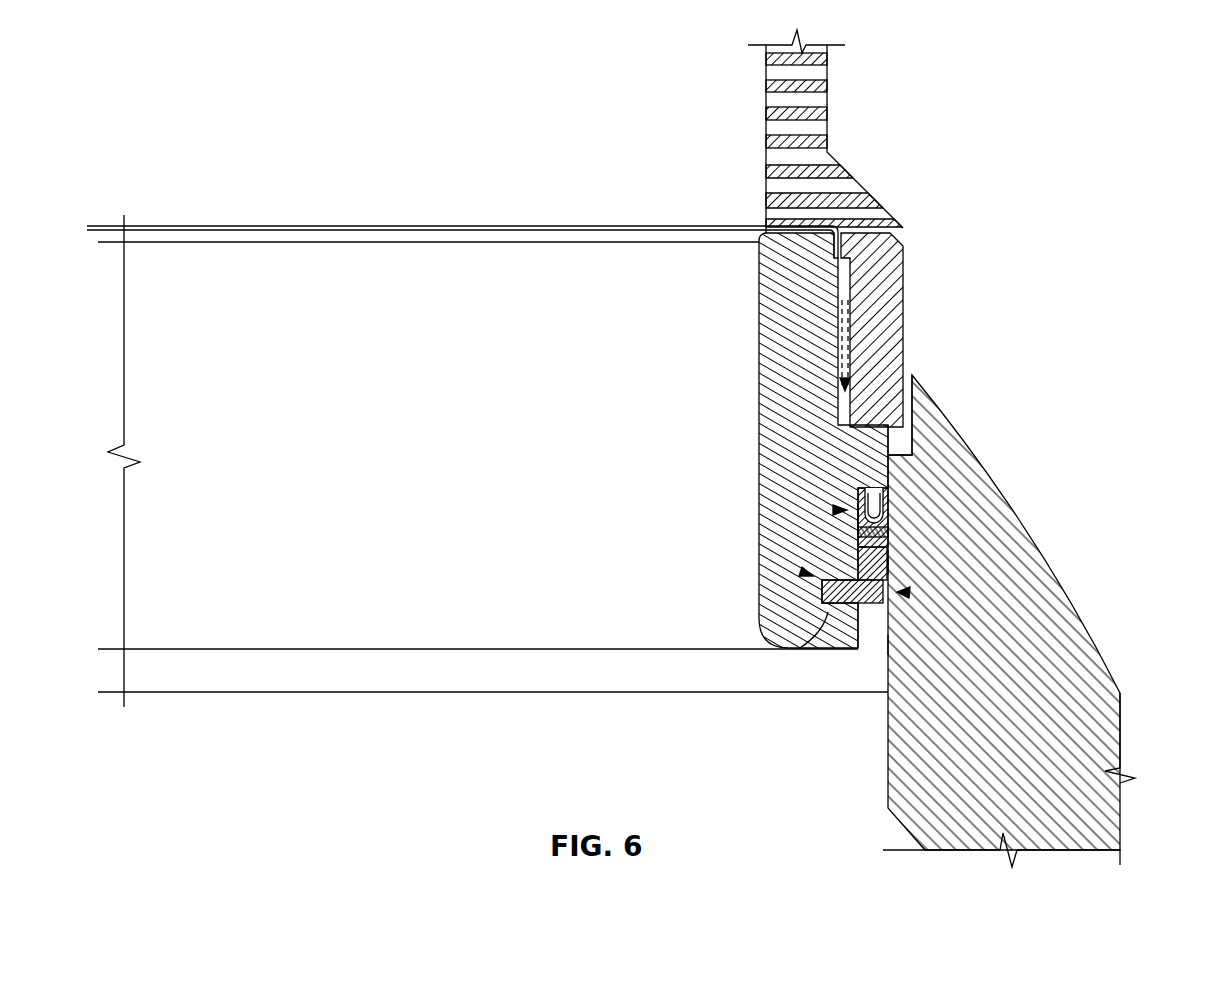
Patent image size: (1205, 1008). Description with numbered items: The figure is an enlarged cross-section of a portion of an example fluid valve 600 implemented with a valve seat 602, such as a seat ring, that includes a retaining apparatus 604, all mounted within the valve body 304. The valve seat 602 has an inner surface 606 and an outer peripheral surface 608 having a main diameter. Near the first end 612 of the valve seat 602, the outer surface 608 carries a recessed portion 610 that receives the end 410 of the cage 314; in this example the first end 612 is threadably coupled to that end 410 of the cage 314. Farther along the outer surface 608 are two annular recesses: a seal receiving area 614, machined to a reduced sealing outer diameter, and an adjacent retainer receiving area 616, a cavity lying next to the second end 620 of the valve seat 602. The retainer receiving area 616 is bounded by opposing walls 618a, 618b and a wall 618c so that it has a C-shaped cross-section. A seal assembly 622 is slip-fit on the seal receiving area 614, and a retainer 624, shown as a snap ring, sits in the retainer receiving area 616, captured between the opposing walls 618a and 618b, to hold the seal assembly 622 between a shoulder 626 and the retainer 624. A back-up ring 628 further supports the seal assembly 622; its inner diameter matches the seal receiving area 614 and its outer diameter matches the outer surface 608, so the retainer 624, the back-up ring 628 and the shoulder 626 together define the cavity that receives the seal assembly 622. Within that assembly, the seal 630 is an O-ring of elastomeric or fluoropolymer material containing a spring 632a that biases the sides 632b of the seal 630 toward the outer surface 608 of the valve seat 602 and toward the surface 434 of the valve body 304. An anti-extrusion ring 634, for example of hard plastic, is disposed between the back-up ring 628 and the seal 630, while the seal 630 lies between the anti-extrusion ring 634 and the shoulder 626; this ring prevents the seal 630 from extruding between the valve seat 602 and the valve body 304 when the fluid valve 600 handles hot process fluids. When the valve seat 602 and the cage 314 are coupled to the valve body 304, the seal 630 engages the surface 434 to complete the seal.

The fluid valve 600 is at (393, 62).
The cage 314 is at (827, 87).
The first end 612 is at (785, 227).
The end of the cage 410 is at (882, 288).
The recessed portion 610 is at (848, 300).
The inner surface 606 is at (758, 612).
The valve body 304 is at (903, 823).
The outer surface 608 is at (888, 448).
The shoulder 626 is at (860, 488).
The seal 630 is at (870, 510).
The spring 632a is at (860, 497).
The sides of the seal 632b is at (866, 530).
The seal assembly 622 is at (910, 536).
The opposing wall 618a is at (858, 548).
The opposing wall 618b is at (800, 648).
The wall 618c is at (822, 591).
The seal receiving area 614 is at (833, 509).
The retainer receiving area 616 is at (800, 571).
The retainer 624 is at (850, 577).
The valve seat 602 is at (847, 637).
The retaining apparatus 604 is at (908, 592).
The second end 620 is at (492, 652).
The back-up ring 628 is at (889, 565).
The anti-extrusion ring 634 is at (888, 557).
The surface of the valve body 434 is at (888, 643).